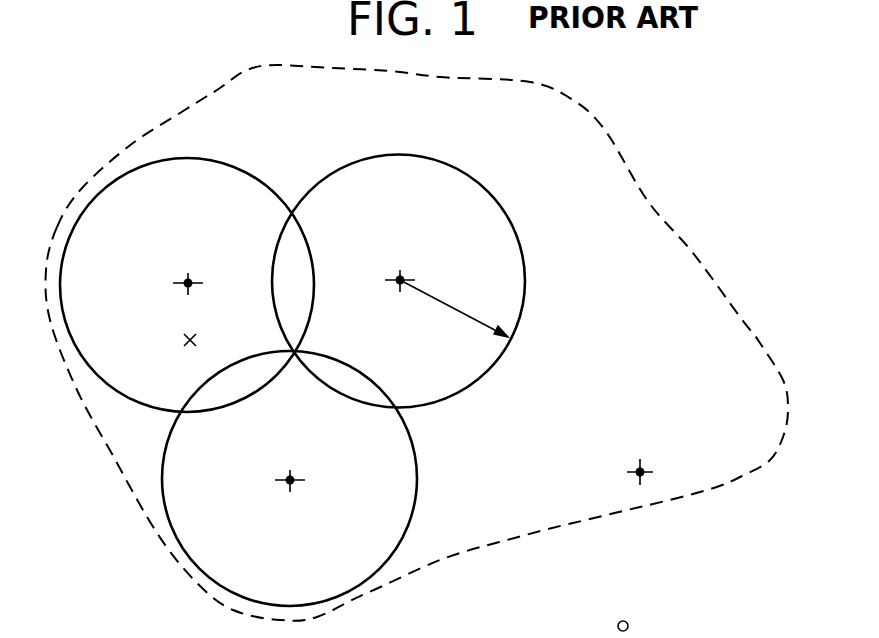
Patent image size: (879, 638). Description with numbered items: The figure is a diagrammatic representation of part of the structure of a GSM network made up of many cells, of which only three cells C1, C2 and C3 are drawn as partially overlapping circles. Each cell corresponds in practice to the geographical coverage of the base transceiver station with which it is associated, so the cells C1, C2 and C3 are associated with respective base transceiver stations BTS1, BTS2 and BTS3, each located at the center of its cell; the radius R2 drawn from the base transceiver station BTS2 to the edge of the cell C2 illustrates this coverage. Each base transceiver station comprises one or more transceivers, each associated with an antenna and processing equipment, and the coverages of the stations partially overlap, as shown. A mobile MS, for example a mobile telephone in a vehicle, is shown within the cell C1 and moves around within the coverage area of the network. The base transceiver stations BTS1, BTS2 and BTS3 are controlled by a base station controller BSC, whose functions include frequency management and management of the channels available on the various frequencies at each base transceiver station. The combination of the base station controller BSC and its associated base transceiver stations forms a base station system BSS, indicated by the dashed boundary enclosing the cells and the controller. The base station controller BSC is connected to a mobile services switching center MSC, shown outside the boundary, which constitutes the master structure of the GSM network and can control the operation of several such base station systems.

The cell C1 is at (206, 163).
The cell C2 is at (435, 161).
The cell C3 is at (408, 477).
The base transceiver station BTS1 is at (185, 282).
The base transceiver station BTS2 is at (398, 278).
The base transceiver station BTS3 is at (287, 478).
The radius of cell 2 R2 is at (454, 308).
The mobile MS is at (186, 339).
The base station system BSS is at (647, 185).
The base station controller BSC is at (643, 468).
The mobile services switching center MSC is at (626, 621).